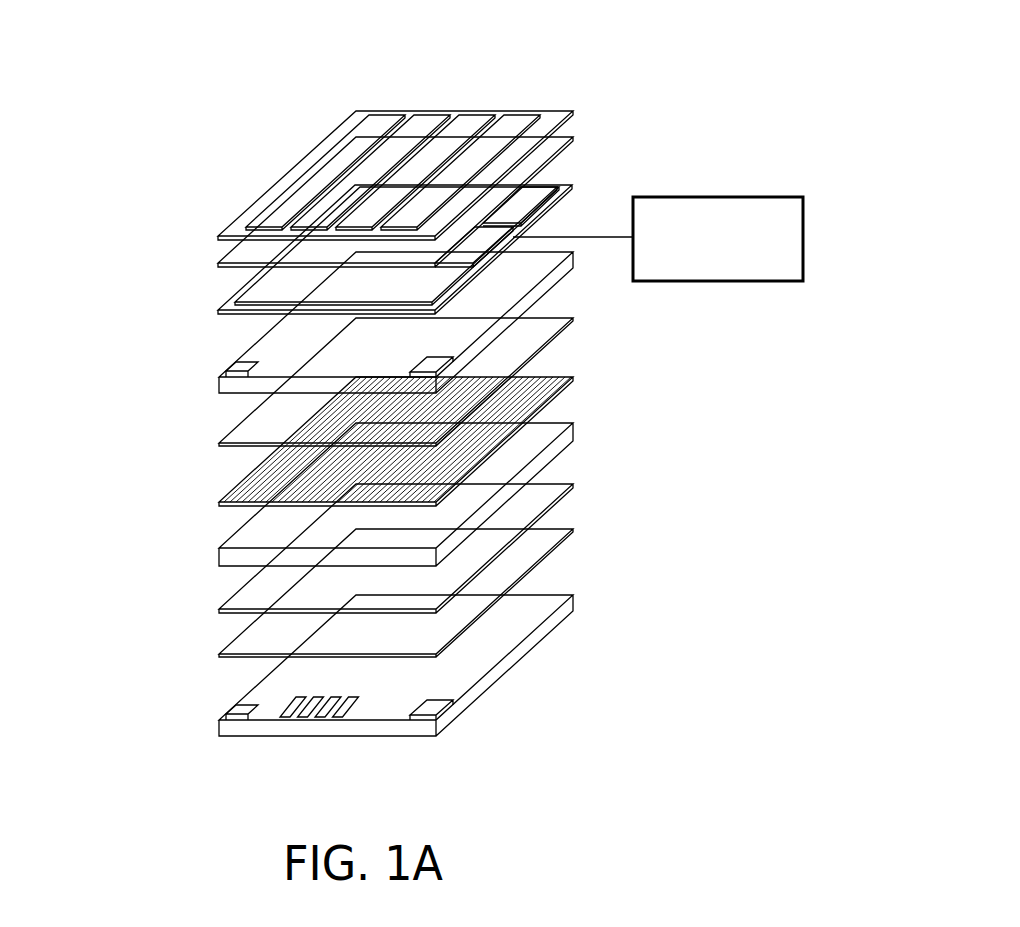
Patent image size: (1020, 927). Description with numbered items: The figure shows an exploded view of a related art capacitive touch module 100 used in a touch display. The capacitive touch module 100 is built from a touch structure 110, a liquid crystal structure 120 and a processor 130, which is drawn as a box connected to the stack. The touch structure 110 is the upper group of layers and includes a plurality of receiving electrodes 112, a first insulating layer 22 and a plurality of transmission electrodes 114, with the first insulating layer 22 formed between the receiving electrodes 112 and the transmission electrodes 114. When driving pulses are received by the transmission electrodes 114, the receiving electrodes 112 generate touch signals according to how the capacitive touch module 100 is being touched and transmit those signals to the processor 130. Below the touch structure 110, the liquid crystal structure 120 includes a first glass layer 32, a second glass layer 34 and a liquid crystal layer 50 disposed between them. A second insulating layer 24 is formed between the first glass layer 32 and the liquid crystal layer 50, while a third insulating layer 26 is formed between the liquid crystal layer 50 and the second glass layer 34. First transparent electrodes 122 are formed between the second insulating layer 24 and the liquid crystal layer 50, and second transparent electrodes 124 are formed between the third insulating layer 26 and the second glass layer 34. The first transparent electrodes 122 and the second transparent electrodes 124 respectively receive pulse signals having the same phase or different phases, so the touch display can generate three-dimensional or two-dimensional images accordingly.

The capacitive touch module 100 is at (682, 78).
The touch structure 110 is at (150, 185).
The receiving electrodes 112 is at (245, 213).
The first insulating layer 22 is at (223, 258).
The transmission electrodes 114 is at (226, 301).
The liquid crystal structure 120 is at (147, 740).
The first glass layer 32 is at (219, 384).
The second insulating layer 24 is at (221, 441).
The first transparent electrodes 122 is at (232, 490).
The liquid crystal layer 50 is at (228, 540).
The third insulating layer 26 is at (229, 600).
The second transparent electrodes 124 is at (228, 646).
The second glass layer 34 is at (219, 726).
The processor 130 is at (722, 197).